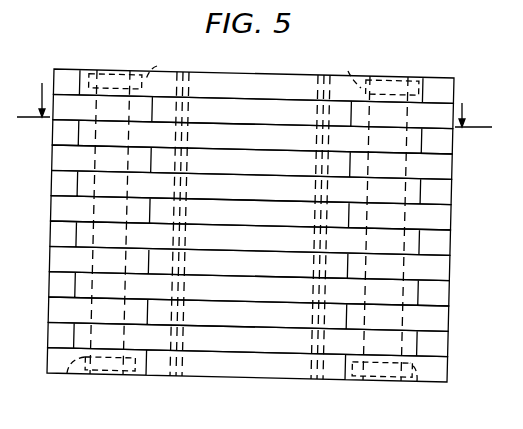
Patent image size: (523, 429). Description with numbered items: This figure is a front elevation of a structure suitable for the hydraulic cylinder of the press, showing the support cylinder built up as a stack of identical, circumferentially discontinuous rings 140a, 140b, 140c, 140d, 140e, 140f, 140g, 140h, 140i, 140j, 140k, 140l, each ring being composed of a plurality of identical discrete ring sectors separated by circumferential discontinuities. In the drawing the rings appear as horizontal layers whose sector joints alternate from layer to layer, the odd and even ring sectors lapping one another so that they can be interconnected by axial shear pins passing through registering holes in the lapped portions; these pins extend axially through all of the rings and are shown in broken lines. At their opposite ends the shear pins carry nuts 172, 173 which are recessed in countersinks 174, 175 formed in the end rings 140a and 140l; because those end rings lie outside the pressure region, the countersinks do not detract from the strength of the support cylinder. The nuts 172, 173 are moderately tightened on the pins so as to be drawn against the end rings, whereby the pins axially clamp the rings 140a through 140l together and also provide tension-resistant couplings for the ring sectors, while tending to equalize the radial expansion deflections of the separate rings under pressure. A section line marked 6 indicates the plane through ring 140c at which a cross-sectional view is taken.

The ring 140a is at (54, 72).
The ring 140b is at (55, 93).
The ring 140c is at (52, 135).
The ring 140d is at (52, 157).
The ring 140e is at (51, 182).
The ring 140f is at (51, 207).
The ring 140g is at (50, 232).
The ring 140h is at (50, 258).
The ring 140i is at (49, 283).
The ring 140j is at (48, 308).
The ring 140k is at (48, 333).
The ring 140l is at (47, 358).
The nut 172 is at (137, 77).
The nut 173 is at (87, 375).
The countersink 174 is at (254, 69).
The countersink 175 is at (67, 373).
The section line 6- 6 is at (254, 105).